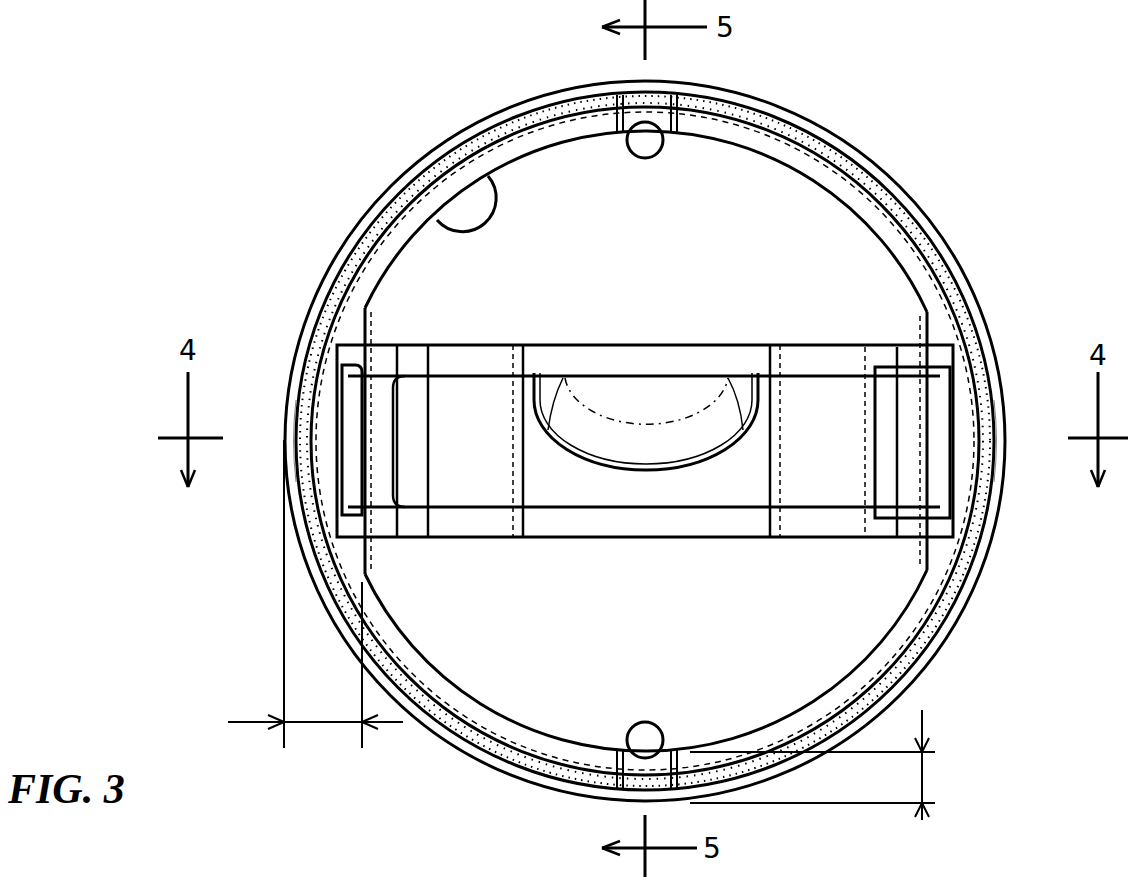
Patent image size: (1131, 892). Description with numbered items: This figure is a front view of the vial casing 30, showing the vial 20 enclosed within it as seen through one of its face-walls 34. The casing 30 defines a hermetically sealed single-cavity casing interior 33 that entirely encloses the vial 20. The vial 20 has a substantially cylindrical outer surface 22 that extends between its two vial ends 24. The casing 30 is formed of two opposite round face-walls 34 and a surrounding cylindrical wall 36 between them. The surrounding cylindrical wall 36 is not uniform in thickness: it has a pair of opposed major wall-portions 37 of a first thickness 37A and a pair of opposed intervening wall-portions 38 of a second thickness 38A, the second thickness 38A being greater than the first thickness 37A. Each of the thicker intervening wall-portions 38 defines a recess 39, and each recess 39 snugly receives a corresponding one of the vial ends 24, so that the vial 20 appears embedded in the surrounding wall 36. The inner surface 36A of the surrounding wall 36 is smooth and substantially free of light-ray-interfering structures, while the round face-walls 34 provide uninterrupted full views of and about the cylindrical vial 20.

The vial 20 is at (670, 387).
The cylindrical outer surface 22 is at (748, 342).
The vial ends 24 is at (345, 390).
The vial casing 30 is at (1012, 117).
The casing interior 33 is at (703, 250).
The face-walls 34 is at (555, 180).
The surrounding cylindrical wall 36 is at (465, 148).
The inner surface 36A is at (437, 220).
The major wall-portions 37 is at (705, 125).
The first thickness 37A is at (925, 778).
The intervening wall-portions 38 is at (323, 437).
The second thickness 38A is at (328, 725).
The recess 39 is at (358, 305).